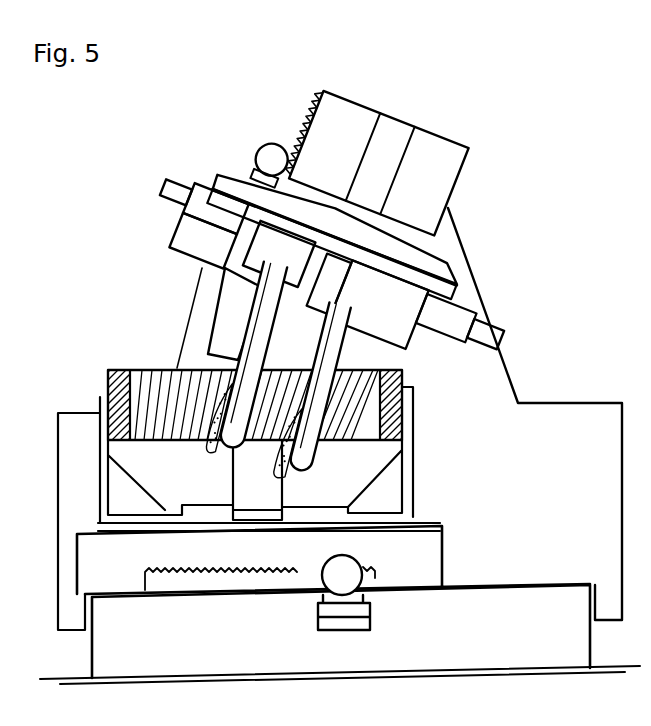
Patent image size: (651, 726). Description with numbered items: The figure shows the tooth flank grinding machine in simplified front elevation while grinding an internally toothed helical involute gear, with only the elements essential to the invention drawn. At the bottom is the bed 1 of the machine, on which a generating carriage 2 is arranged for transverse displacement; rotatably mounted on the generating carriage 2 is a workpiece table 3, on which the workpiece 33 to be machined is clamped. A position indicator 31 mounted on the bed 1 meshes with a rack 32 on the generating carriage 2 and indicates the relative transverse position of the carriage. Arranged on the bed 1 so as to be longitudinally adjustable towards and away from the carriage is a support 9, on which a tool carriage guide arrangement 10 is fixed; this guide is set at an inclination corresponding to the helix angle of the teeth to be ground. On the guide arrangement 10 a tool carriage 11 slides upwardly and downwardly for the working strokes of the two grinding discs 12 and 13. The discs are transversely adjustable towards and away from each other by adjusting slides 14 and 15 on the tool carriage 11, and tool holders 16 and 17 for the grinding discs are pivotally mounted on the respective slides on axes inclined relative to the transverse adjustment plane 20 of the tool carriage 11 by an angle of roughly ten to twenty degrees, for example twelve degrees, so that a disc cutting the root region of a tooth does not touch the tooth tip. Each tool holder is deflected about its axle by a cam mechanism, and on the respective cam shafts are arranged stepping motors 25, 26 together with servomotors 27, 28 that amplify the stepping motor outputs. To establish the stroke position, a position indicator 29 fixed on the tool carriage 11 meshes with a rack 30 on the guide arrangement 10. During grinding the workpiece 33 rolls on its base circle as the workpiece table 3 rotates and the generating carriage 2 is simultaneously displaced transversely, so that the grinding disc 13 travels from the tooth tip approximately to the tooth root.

The bed 1 is at (403, 671).
The generating carriage 2 is at (92, 575).
The workpiece table 3 is at (115, 533).
The support 9 is at (569, 404).
The tool carriage guide arrangement 10 is at (438, 148).
The tool carriage 11 is at (424, 270).
The grinding disc 12 is at (216, 454).
The grinding disc 13 is at (288, 482).
The adjusting slide 14 is at (278, 222).
The adjusting slide 15 is at (440, 278).
The tool holder 16 is at (248, 323).
The tool holder 17 is at (305, 453).
The transverse adjustment plane 20 is at (190, 246).
The stepping motor 25 is at (170, 186).
The stepping motor 26 is at (500, 341).
The servomotor 27 is at (206, 178).
The servomotor 28 is at (472, 308).
The position indicator 29 is at (271, 150).
The rack 30 is at (313, 116).
The position indicator 31 is at (325, 577).
The rack 32 is at (210, 580).
The workpiece 33 is at (108, 384).